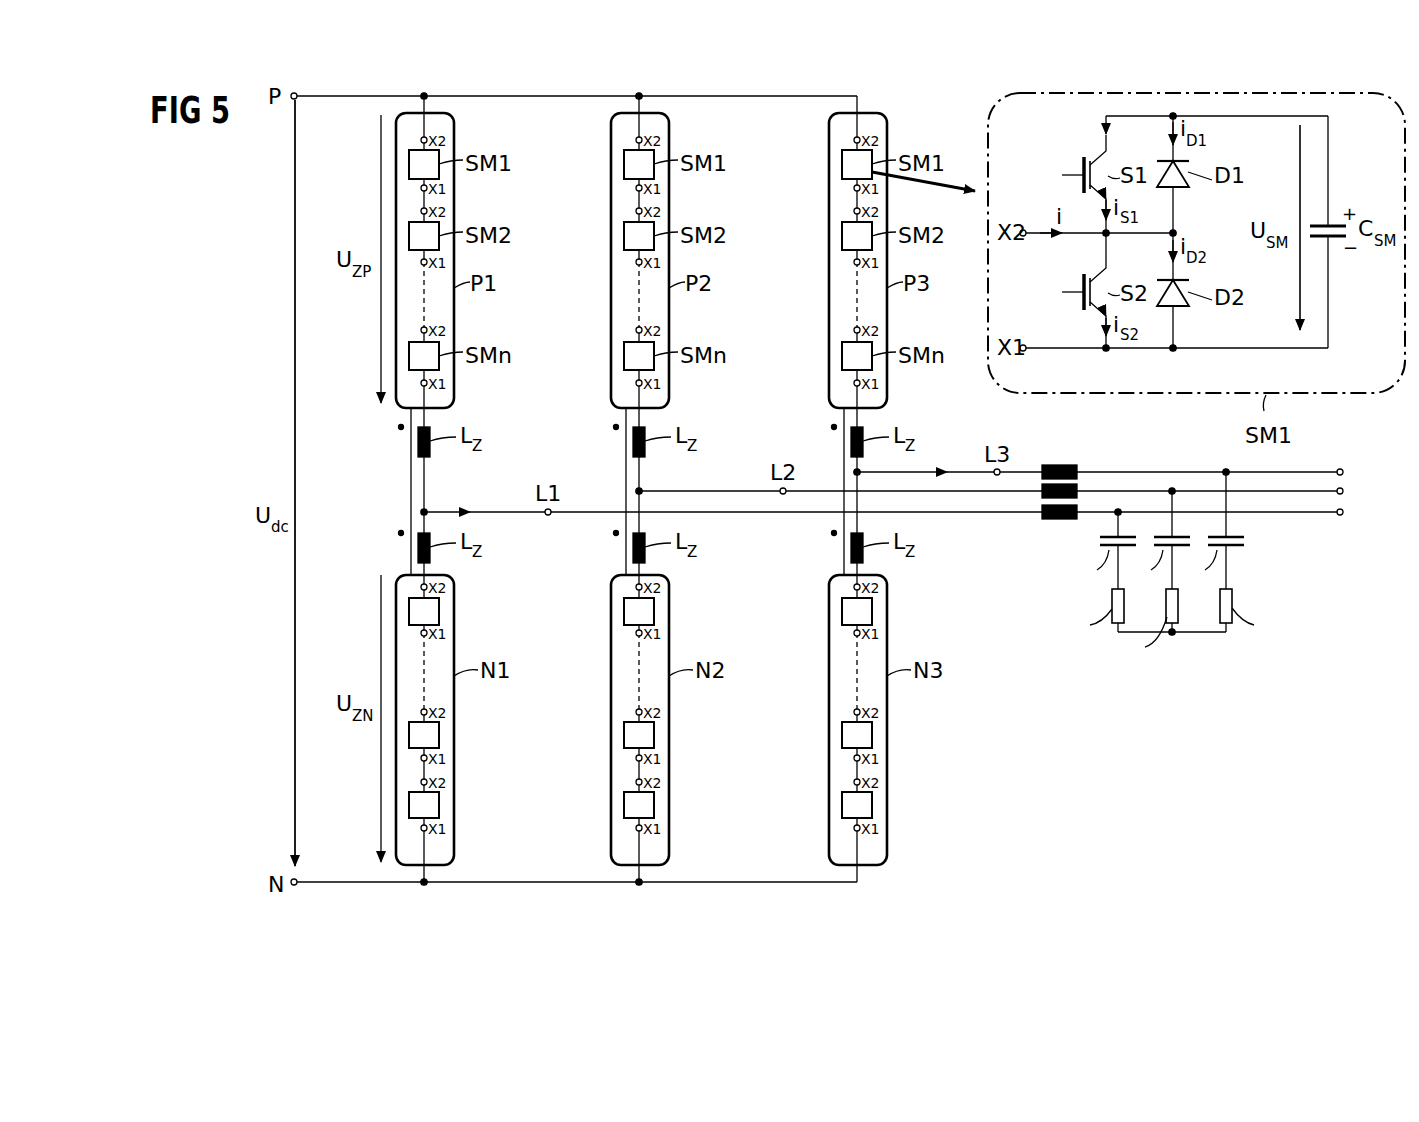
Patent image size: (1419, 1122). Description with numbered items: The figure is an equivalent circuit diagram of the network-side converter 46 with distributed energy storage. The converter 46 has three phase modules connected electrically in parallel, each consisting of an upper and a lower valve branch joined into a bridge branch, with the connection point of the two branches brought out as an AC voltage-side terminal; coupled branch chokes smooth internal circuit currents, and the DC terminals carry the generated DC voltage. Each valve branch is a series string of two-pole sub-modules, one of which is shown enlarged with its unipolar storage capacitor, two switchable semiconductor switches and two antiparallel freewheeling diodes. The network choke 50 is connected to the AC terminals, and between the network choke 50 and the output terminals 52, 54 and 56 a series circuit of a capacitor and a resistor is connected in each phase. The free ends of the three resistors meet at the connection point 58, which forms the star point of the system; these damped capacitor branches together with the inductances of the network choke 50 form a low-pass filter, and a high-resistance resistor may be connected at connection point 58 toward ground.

The converter 46 is at (306, 369).
The network choke 50 is at (1056, 520).
The output terminal 52 is at (1343, 513).
The output terminal 54 is at (1343, 491).
The output terminal 56 is at (1343, 471).
The connection point 58 is at (1172, 636).